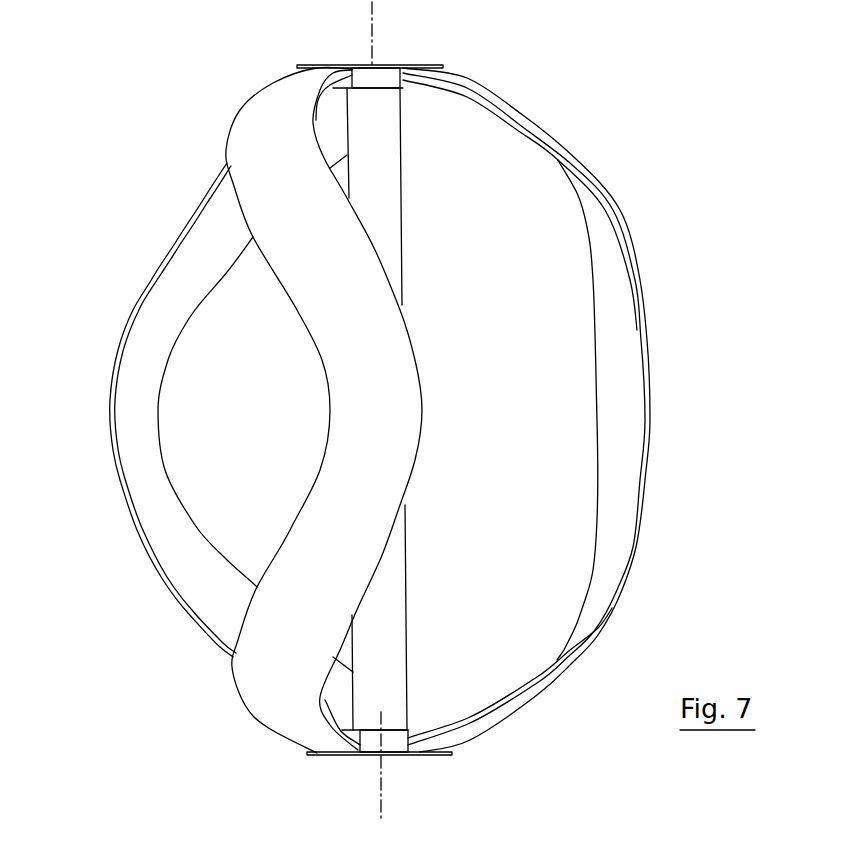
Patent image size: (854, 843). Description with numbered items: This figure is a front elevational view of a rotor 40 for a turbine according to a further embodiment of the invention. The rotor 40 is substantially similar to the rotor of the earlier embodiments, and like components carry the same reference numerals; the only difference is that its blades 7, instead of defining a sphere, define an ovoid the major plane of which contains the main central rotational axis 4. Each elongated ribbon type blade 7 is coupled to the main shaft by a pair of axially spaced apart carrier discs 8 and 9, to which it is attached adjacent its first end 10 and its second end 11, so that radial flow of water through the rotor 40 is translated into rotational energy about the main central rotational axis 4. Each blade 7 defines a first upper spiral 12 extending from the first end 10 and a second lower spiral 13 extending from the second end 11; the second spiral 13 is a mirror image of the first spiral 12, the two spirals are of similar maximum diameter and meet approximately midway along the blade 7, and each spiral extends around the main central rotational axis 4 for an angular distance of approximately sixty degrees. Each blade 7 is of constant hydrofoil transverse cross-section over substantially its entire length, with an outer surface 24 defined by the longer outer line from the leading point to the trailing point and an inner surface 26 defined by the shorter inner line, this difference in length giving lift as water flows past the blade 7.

The main central rotational axis 4 is at (373, 35).
The ribbon type blade 7 is at (382, 352).
The carrier disc 8 is at (377, 80).
The carrier disc 9 is at (373, 743).
The first end 10 is at (323, 73).
The second end 11 is at (335, 747).
The first upper spiral 12 is at (270, 108).
The second lower spiral 13 is at (204, 587).
The outer surface 24 is at (252, 153).
The inner surface 26 is at (162, 315).
The rotor 40 is at (138, 692).